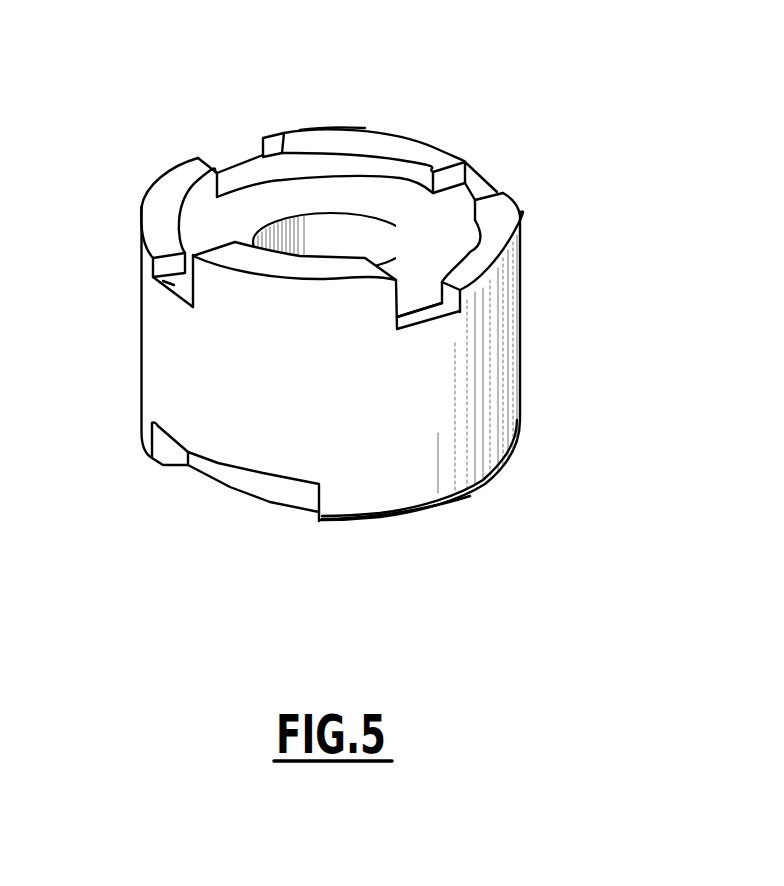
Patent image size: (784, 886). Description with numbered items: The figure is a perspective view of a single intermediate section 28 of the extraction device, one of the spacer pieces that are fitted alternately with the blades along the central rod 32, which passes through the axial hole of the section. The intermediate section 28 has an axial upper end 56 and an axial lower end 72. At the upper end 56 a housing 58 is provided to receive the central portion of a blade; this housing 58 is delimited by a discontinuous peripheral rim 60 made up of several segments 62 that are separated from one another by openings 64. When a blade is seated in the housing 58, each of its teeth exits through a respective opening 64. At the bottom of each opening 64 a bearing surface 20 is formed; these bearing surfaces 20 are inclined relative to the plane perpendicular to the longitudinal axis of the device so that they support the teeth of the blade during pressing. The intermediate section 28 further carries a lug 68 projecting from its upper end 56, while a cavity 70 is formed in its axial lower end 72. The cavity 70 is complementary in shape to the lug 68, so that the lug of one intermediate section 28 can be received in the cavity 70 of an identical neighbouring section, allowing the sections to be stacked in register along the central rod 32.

The bearing surface 20 is at (223, 162).
The intermediate section 28 is at (566, 126).
The central rod 32 is at (331, 242).
The axial upper end 56 is at (353, 122).
The housing 58 is at (222, 218).
The discontinuous peripheral rim 60 is at (444, 135).
The segment 62 is at (407, 143).
The opening 64 is at (246, 155).
The lug 68 is at (270, 293).
The cavity 70 is at (218, 464).
The axial lower end 72 is at (457, 513).